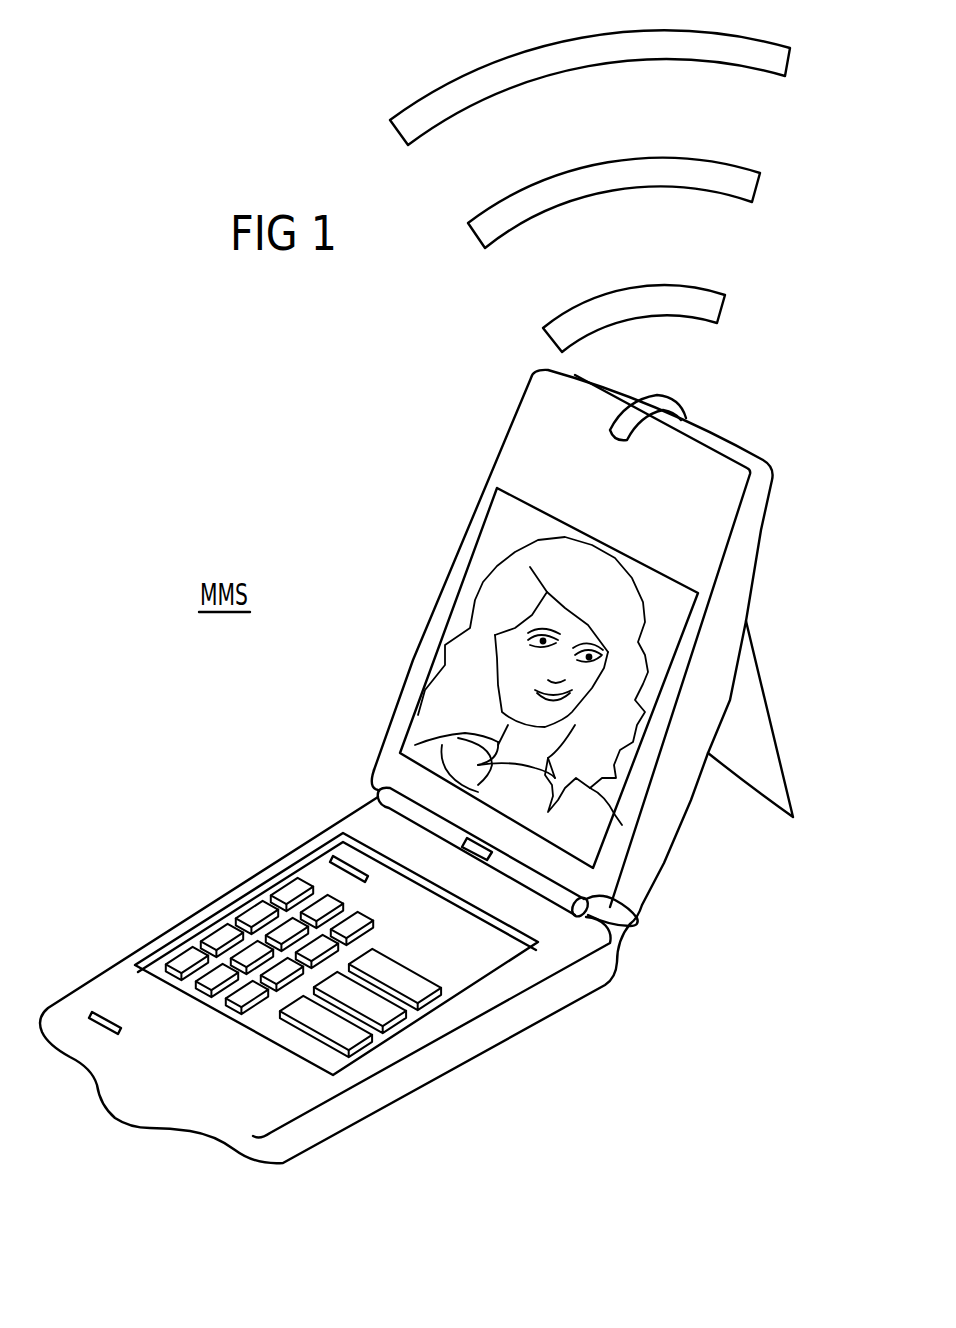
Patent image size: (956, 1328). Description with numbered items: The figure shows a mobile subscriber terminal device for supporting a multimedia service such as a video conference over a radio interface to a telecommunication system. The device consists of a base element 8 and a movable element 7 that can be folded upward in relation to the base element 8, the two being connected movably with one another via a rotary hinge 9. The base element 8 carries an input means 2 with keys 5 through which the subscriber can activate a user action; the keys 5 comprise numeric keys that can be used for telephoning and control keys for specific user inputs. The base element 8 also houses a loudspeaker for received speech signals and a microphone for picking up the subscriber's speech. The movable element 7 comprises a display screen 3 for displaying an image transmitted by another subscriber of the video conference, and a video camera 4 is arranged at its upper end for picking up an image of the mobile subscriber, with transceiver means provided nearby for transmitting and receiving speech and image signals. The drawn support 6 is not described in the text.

The input means 2 is at (328, 1060).
The display screen 3 is at (505, 533).
The video camera 4 is at (657, 398).
The keys 5 is at (357, 997).
The stand 6 is at (760, 710).
The movable element 7 is at (685, 806).
The base element 8 is at (505, 1022).
The rotary hinge 9 is at (642, 913).